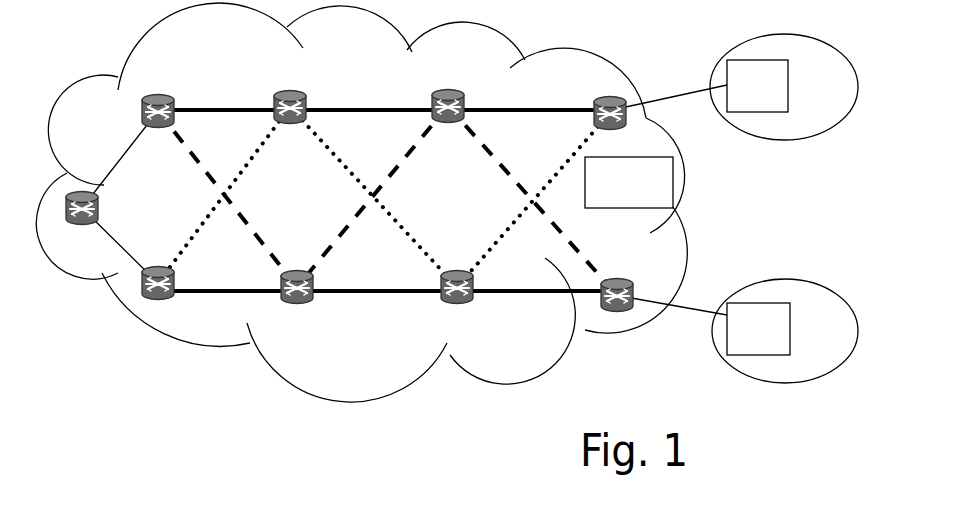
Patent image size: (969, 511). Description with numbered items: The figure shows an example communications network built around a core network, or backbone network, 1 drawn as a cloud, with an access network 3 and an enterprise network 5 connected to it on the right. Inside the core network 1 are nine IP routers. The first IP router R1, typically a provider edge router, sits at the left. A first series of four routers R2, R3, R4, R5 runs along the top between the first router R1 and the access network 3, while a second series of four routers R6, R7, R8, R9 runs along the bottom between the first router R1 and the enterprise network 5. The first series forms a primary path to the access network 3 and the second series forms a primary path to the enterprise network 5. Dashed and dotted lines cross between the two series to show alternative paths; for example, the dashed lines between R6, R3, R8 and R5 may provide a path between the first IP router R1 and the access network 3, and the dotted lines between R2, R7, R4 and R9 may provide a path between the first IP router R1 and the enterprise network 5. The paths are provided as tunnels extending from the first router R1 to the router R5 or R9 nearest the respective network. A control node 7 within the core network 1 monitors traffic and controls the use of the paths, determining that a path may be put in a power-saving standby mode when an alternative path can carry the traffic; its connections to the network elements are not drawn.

The core network 1 is at (175, 50).
The access network 3 is at (808, 97).
The enterprise network 5 is at (809, 352).
The control node 7 is at (640, 194).
The first IP router R1 is at (93, 210).
The IP router R2 is at (160, 92).
The IP router R3 is at (290, 90).
The IP router R4 is at (447, 86).
The IP router R5 is at (604, 97).
The IP router R6 is at (160, 298).
The IP router R7 is at (298, 304).
The IP router R8 is at (462, 304).
The IP router R9 is at (612, 312).